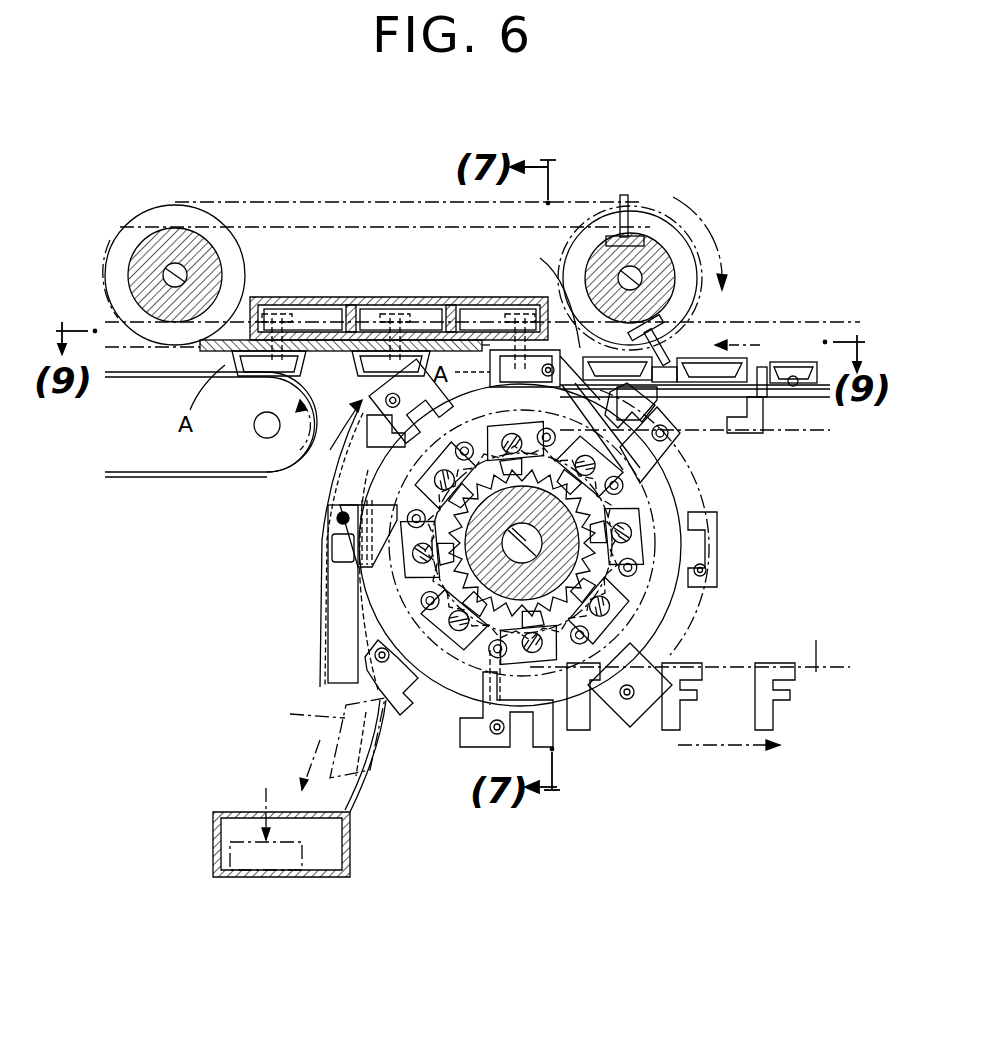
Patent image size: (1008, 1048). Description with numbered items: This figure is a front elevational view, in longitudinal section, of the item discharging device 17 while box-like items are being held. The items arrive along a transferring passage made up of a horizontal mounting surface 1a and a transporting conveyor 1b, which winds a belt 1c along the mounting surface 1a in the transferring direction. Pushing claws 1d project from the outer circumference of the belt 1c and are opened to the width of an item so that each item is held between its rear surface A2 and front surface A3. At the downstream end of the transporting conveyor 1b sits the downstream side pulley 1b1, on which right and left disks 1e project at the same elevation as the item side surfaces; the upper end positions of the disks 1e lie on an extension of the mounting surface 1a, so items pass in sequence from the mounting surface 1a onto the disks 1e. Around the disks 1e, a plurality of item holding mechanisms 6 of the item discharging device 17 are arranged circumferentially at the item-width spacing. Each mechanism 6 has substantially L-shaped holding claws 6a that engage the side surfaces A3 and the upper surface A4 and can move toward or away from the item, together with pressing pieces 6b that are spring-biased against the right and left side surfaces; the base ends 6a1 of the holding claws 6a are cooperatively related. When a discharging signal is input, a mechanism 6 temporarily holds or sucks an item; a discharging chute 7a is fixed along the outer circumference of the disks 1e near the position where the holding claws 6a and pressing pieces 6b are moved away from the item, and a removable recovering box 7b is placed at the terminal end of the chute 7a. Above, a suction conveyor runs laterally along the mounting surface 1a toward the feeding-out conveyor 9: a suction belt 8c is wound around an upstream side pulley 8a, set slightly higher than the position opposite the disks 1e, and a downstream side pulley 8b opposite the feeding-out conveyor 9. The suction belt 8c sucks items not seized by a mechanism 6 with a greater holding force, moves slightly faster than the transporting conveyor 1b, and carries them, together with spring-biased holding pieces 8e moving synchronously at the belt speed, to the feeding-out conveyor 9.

The item holding mechanism 6 is at (472, 298).
The holding claw 6a is at (425, 560).
The base end of holding claw 6a1 is at (540, 676).
The pressing piece 6b is at (540, 258).
The discharging chute 7a is at (336, 608).
The recovering box 7b is at (225, 818).
The upstream side pulley 8a is at (585, 250).
The downstream side pulley 8b is at (145, 218).
The suction belt 8c is at (306, 200).
The holding piece 8e is at (276, 312).
The feeding-out conveyor 9 is at (140, 380).
The item discharging device 17 is at (330, 450).
The mounting surface 1a is at (800, 385).
The transporting conveyor 1b is at (726, 660).
The downstream side pulley 1b1 is at (488, 680).
The belt 1c is at (821, 636).
The pushing claw 1d is at (775, 358).
The disk 1e is at (665, 470).
The rear surface A2 is at (740, 405).
The front surface A3 is at (757, 433).
The upper surface A4 is at (692, 360).